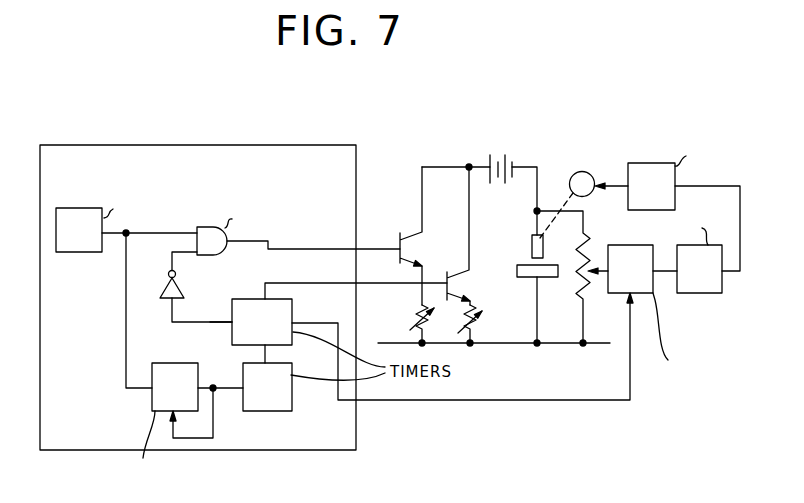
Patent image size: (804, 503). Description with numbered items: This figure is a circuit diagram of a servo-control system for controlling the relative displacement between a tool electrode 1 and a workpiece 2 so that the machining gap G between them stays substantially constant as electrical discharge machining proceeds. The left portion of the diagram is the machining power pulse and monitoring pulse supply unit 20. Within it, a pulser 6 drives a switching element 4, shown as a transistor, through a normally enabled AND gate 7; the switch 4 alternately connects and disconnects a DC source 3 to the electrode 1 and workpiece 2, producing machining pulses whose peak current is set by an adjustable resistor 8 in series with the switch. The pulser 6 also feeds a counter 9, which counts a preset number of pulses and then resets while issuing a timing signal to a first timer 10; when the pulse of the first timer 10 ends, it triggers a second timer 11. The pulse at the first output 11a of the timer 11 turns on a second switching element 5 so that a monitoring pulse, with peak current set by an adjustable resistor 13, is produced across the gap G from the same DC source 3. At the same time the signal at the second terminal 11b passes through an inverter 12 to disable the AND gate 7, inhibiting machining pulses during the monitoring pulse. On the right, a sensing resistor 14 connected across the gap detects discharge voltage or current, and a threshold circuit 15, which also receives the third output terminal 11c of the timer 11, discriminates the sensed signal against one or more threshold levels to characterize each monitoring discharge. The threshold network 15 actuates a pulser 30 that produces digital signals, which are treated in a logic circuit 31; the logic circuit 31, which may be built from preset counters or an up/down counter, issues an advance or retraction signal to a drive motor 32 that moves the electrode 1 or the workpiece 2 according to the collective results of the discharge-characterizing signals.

The tool electrode 1 is at (530, 246).
The workpiece 2 is at (531, 278).
The DC source 3 is at (493, 155).
The switching element 4 is at (420, 247).
The switching element 5 is at (462, 278).
The pulser 6 is at (93, 208).
The AND gate 7 is at (208, 227).
The adjustable resistor 8 is at (413, 311).
The counter 9 is at (152, 397).
The first timer 10 is at (292, 393).
The second timer 11 is at (294, 335).
The first output 11a is at (264, 298).
The second terminal 11b is at (230, 324).
The third output terminal 11c is at (293, 323).
The inverter 12 is at (181, 288).
The adjustable resistor 13 is at (478, 322).
The sensing resistor 14 is at (578, 290).
The threshold circuit 15 is at (645, 293).
The machining power pulse and monitoring pulse supply unit 20 is at (220, 145).
The pulser 30 is at (703, 293).
The logic circuit 31 is at (648, 163).
The drive motor 32 is at (582, 172).